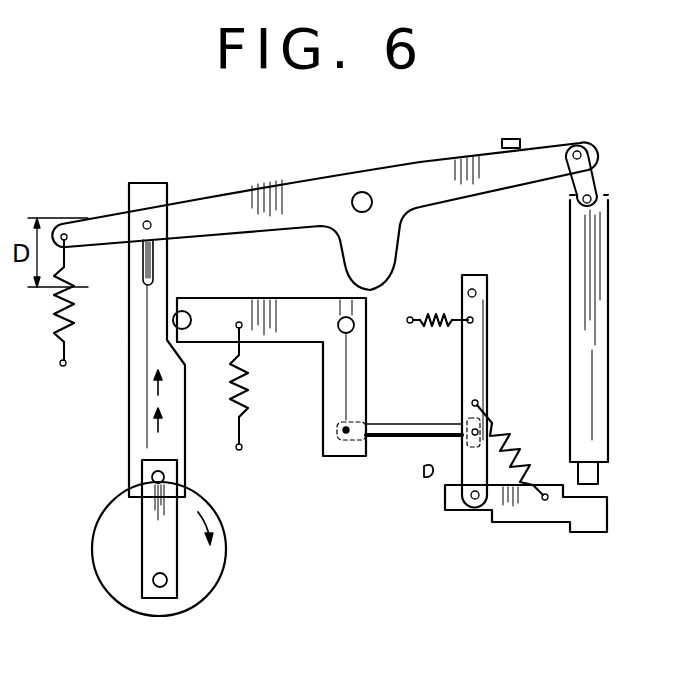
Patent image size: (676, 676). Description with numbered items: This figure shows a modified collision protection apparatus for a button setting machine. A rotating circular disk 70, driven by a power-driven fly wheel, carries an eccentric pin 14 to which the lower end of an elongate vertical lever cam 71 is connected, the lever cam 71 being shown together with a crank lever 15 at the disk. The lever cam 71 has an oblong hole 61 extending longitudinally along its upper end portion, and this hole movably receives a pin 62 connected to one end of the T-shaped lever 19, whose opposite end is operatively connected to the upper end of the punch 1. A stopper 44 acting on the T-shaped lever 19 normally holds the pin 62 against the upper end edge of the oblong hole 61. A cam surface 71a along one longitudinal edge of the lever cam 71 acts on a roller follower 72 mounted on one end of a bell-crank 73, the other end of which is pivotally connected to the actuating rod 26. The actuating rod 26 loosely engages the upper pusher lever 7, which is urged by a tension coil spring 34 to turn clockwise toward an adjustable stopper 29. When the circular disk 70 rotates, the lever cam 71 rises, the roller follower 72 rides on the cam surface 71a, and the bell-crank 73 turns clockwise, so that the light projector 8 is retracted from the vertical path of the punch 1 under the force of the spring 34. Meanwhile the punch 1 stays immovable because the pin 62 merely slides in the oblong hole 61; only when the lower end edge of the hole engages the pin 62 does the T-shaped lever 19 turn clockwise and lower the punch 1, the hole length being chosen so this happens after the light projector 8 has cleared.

The punch 1 is at (595, 370).
The upper pusher lever 7 is at (482, 362).
The light projector 8 is at (587, 528).
The eccentric pin 14 is at (167, 583).
The crank lever 15 is at (150, 533).
The T-shaped lever 19 is at (320, 185).
The actuating rod 26 is at (393, 442).
The stopper 29 is at (424, 470).
The tension coil spring 34 is at (435, 313).
The stopper 44 is at (507, 140).
The oblong hole 61 is at (143, 263).
The pin 62 is at (148, 220).
The rotating circular disk 70 is at (212, 573).
The lever cam 71 is at (138, 408).
The cam surface 71a is at (187, 440).
The roller follower 72 is at (185, 313).
The bell-crank 73 is at (297, 307).